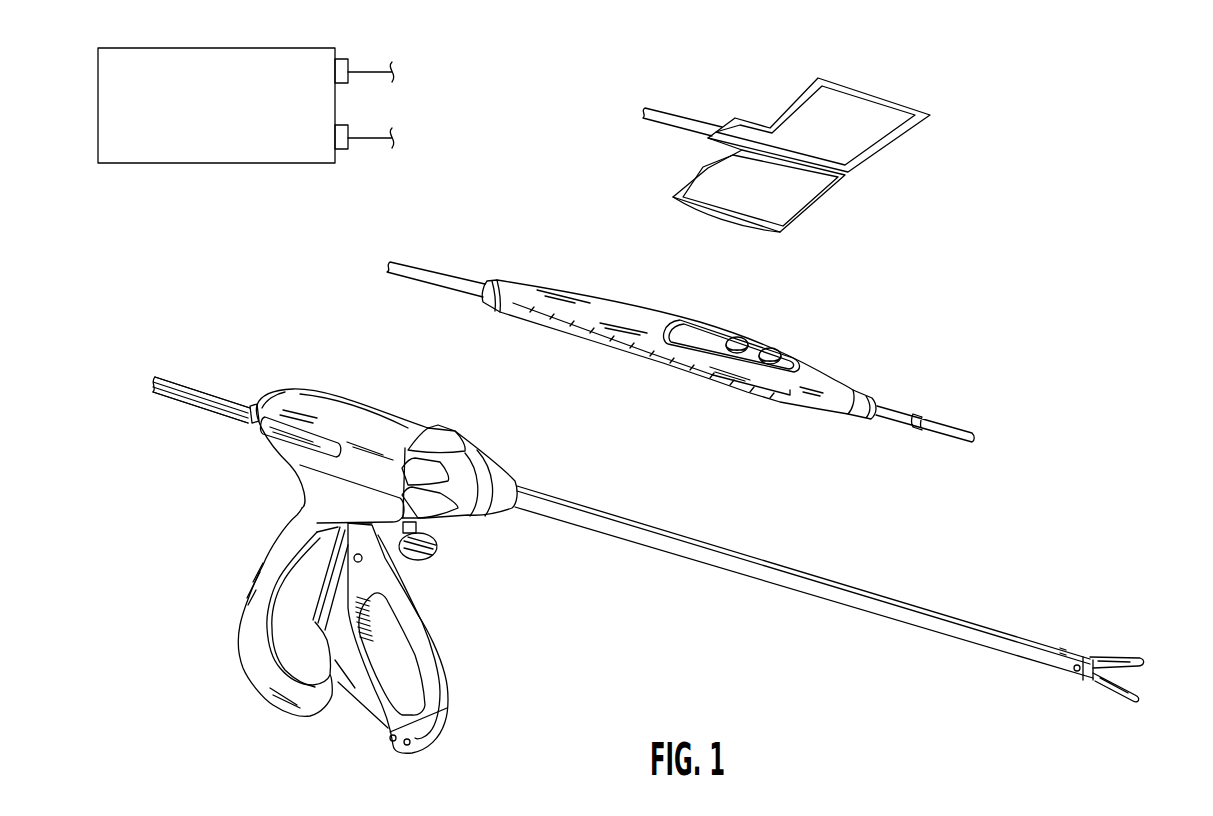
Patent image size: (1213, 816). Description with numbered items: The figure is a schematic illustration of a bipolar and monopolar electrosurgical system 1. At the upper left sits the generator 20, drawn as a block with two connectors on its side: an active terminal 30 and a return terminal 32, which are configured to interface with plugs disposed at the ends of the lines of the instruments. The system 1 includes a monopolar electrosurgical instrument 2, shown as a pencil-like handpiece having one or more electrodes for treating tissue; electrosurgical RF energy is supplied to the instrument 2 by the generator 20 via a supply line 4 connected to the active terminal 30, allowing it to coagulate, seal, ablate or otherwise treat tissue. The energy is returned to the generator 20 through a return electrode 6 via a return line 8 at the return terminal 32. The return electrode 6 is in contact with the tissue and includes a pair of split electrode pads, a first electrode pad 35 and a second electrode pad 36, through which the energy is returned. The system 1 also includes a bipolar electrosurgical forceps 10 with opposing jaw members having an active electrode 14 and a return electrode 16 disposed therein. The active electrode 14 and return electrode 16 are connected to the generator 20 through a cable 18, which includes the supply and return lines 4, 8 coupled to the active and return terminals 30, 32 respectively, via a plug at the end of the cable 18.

The electrosurgical system 1 is at (1003, 253).
The monopolar electrosurgical instrument 2 is at (563, 337).
The supply line 4 is at (430, 265).
The return electrode 6 is at (543, 260).
The return line 8 is at (674, 107).
The bipolar electrosurgical forceps 10 is at (708, 555).
The active electrode 14 is at (1123, 660).
The return electrode 16 is at (1117, 698).
The cable 18 is at (222, 388).
The generator 20 is at (222, 47).
The active terminal 30 is at (345, 58).
The return terminal 32 is at (344, 149).
The first electrode pad 35 is at (860, 132).
The second electrode pad 36 is at (798, 193).